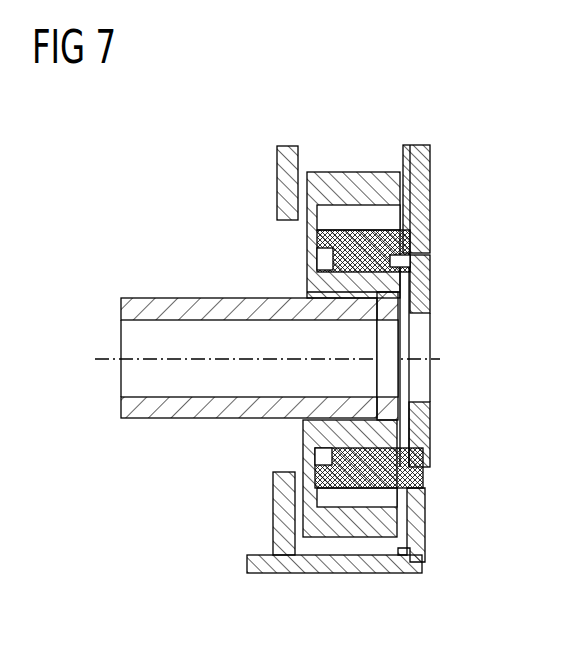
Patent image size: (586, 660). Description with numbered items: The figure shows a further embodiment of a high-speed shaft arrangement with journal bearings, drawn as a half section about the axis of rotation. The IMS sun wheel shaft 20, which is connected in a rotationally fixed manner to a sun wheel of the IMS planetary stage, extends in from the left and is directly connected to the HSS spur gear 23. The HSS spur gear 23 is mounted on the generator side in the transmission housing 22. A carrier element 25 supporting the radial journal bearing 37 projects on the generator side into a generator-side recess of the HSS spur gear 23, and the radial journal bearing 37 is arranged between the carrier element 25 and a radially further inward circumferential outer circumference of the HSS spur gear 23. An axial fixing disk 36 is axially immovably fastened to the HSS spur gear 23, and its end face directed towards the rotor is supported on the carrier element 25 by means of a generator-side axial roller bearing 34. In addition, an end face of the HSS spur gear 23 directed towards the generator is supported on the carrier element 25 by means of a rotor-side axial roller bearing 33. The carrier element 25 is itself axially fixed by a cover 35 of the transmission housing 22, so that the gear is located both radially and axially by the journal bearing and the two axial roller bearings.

The IMS sun wheel shaft 20 is at (145, 312).
The transmission housing 22 is at (377, 560).
The HSS spur gear 23 is at (390, 518).
The carrier element 25 is at (428, 225).
The rotor-side axial roller bearing 33 is at (320, 250).
The generator-side axial roller bearing 34 is at (381, 240).
The cover 35 is at (430, 300).
The axial fixing disk 36 is at (410, 259).
The radial journal bearing 37 is at (331, 211).